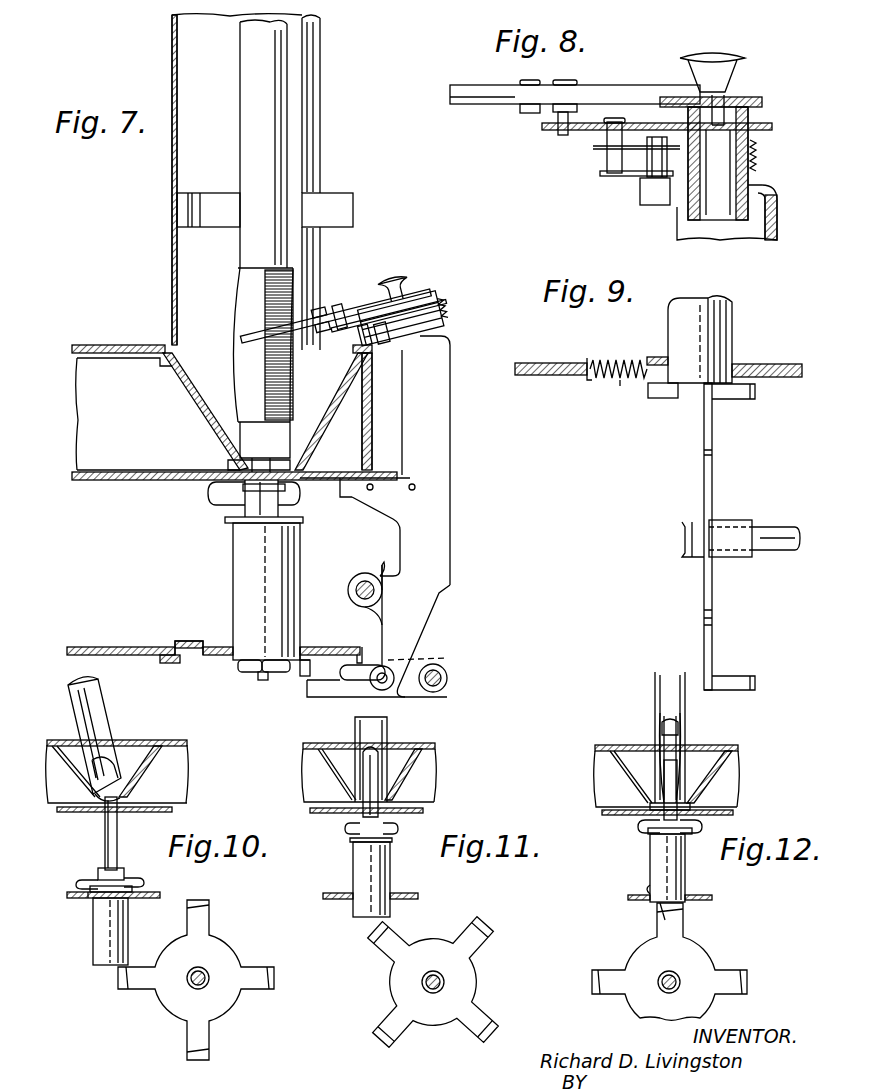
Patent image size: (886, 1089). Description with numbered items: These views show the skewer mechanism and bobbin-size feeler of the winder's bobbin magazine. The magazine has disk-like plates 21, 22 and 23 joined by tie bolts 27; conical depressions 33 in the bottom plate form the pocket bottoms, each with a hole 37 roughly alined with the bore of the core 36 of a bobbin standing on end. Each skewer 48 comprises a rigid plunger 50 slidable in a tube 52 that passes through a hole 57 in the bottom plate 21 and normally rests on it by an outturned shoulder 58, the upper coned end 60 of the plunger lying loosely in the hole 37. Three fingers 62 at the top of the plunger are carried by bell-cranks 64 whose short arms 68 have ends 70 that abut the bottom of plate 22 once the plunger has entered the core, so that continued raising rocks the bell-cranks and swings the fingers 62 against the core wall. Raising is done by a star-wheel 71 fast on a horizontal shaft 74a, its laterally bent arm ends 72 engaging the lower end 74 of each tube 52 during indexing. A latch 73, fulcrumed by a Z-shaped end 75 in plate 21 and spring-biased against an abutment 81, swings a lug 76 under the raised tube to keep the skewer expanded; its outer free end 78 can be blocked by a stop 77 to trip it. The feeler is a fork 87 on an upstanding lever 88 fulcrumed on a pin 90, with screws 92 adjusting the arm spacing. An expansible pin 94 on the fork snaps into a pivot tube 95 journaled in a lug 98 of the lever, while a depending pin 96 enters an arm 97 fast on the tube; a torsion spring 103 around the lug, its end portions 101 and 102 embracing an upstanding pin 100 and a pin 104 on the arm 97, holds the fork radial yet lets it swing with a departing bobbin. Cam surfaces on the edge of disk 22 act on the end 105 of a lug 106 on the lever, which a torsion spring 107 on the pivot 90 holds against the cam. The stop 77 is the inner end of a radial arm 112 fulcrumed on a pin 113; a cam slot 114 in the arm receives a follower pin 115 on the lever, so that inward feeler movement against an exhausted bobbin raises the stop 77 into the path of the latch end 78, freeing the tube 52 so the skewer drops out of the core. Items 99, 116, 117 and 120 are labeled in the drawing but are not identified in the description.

In FIG. 7, the bottom plate 21 is at (121, 646).
In FIG. 9, the bottom plate 21 is at (562, 377).
In FIG. 10, the bottom plate 21 is at (150, 899).
In FIG. 7, the plate 22 is at (98, 480).
In FIG. 10, the plate 22 is at (140, 812).
In FIG. 11, the plate 22 is at (336, 812).
In FIG. 12, the plate 22 is at (735, 816).
In FIG. 7, the plate 23 is at (118, 345).
In FIG. 10, the plate 23 is at (176, 742).
In FIG. 11, the plate 23 is at (436, 744).
In FIG. 12, the plate 23 is at (605, 746).
In FIG. 7, the tie bolts 27 is at (318, 126).
In FIG. 7, the conical depressions 33 is at (192, 392).
In FIG. 10, the conical depressions 33 is at (136, 746).
In FIG. 11, the conical depressions 33 is at (421, 765).
In FIG. 12, the conical depressions 33 is at (700, 786).
In FIG. 7, the bobbin core 36 is at (243, 83).
In FIG. 10, the bobbin core 36 is at (108, 728).
In FIG. 11, the bobbin core 36 is at (390, 730).
In FIG. 12, the bobbin core 36 is at (665, 697).
In FIG. 7, the hole 37 is at (235, 464).
In FIG. 10, the hole 37 is at (96, 795).
In FIG. 12, the hole 37 is at (651, 803).
In FIG. 7, the skewer 48 is at (272, 468).
In FIG. 10, the skewer 48 is at (96, 830).
In FIG. 11, the skewer 48 is at (362, 763).
In FIG. 10, the plunger 50 is at (106, 845).
In FIG. 12, the plunger 50 is at (667, 768).
In FIG. 7, the tube 52 is at (245, 569).
In FIG. 9, the tube 52 is at (730, 334).
In FIG. 10, the tube 52 is at (100, 928).
In FIG. 11, the tube 52 is at (361, 864).
In FIG. 12, the tube 52 is at (660, 861).
In FIG. 7, the hole 57 is at (308, 650).
In FIG. 10, the hole 57 is at (88, 896).
In FIG. 12, the hole 57 is at (655, 893).
In FIG. 7, the outturned shoulder 58 is at (230, 523).
In FIG. 10, the outturned shoulder 58 is at (96, 886).
In FIG. 12, the upper coned end 60 is at (690, 727).
In FIG. 12, the fingers 62 is at (660, 739).
In FIG. 11, the bell-cranks 64 is at (401, 835).
In FIG. 12, the bell-cranks 64 is at (648, 832).
In FIG. 7, the short arms 68 is at (240, 502).
In FIG. 10, the short arms 68 is at (136, 884).
In FIG. 11, the short arms 68 is at (354, 831).
In FIG. 7, the ends 70 is at (212, 490).
In FIG. 10, the ends 70 is at (144, 876).
In FIG. 12, the ends 70 is at (643, 829).
In FIG. 9, the star-wheel 71 is at (708, 470).
In FIG. 10, the star-wheel 71 is at (222, 950).
In FIG. 11, the star-wheel 71 is at (468, 971).
In FIG. 12, the star-wheel 71 is at (696, 960).
In FIG. 9, the laterally bent ends 72 is at (742, 400).
In FIG. 10, the laterally bent ends 72 is at (126, 982).
In FIG. 11, the laterally bent ends 72 is at (380, 928).
In FIG. 12, the laterally bent ends 72 is at (660, 925).
In FIG. 7, the latch 73 is at (198, 635).
In FIG. 9, the latch 73 is at (648, 350).
In FIG. 7, the lower end of tube 74 is at (262, 681).
In FIG. 9, the lower end of tube 74 is at (781, 541).
In FIG. 10, the horizontal shaft 74a is at (195, 988).
In FIG. 11, the horizontal shaft 74a is at (421, 983).
In FIG. 12, the horizontal shaft 74a is at (681, 980).
In FIG. 7, the Z-shaped end 75 is at (178, 663).
In FIG. 7, the lug 76 is at (250, 673).
In FIG. 9, the lug 76 is at (665, 399).
In FIG. 7, the stop 77 is at (300, 677).
In FIG. 7, the outer free end 78 is at (274, 673).
In FIG. 9, the abutment 81 is at (585, 362).
In FIG. 7, the fork 87 is at (246, 319).
In FIG. 8, the fork 87 is at (486, 109).
In FIG. 7, the lever 88 is at (452, 440).
In FIG. 8, the lever 88 is at (752, 236).
In FIG. 9, the lever 88 is at (625, 381).
In FIG. 7, the pin 90 is at (352, 582).
In FIG. 7, the screws 92 is at (327, 318).
In FIG. 8, the expansible pin 94 is at (727, 80).
In FIG. 8, the pivot tube 95 is at (692, 205).
In FIG. 7, the depending pin 96 is at (341, 341).
In FIG. 8, the depending pin 96 is at (558, 130).
In FIG. 8, the arm 97 is at (590, 131).
In FIG. 7, the lug 98 is at (450, 342).
In FIG. 8, the block 99 is at (657, 192).
In FIG. 7, the upstanding pin 100 is at (380, 349).
In FIG. 8, the upstanding pin 100 is at (646, 162).
In FIG. 8, the spring end portion 101 is at (604, 177).
In FIG. 8, the spring end portion 102 is at (600, 150).
In FIG. 7, the torsion spring 103 is at (436, 326).
In FIG. 8, the torsion spring 103 is at (760, 154).
In FIG. 7, the pin 104 is at (362, 330).
In FIG. 8, the pin 104 is at (614, 181).
In FIG. 7, the follower end 105 is at (338, 492).
In FIG. 7, the lug 106 is at (346, 501).
In FIG. 7, the torsion spring 107 is at (374, 564).
In FIG. 7, the arm 112 is at (313, 698).
In FIG. 7, the pin 113 is at (441, 672).
In FIG. 7, the cam slot 114 is at (362, 665).
In FIG. 7, the follower pin 115 is at (396, 668).
In FIG. 7, the block 116 is at (218, 218).
In FIG. 7, the block 117 is at (180, 211).
In FIG. 7, the block 120 is at (345, 210).